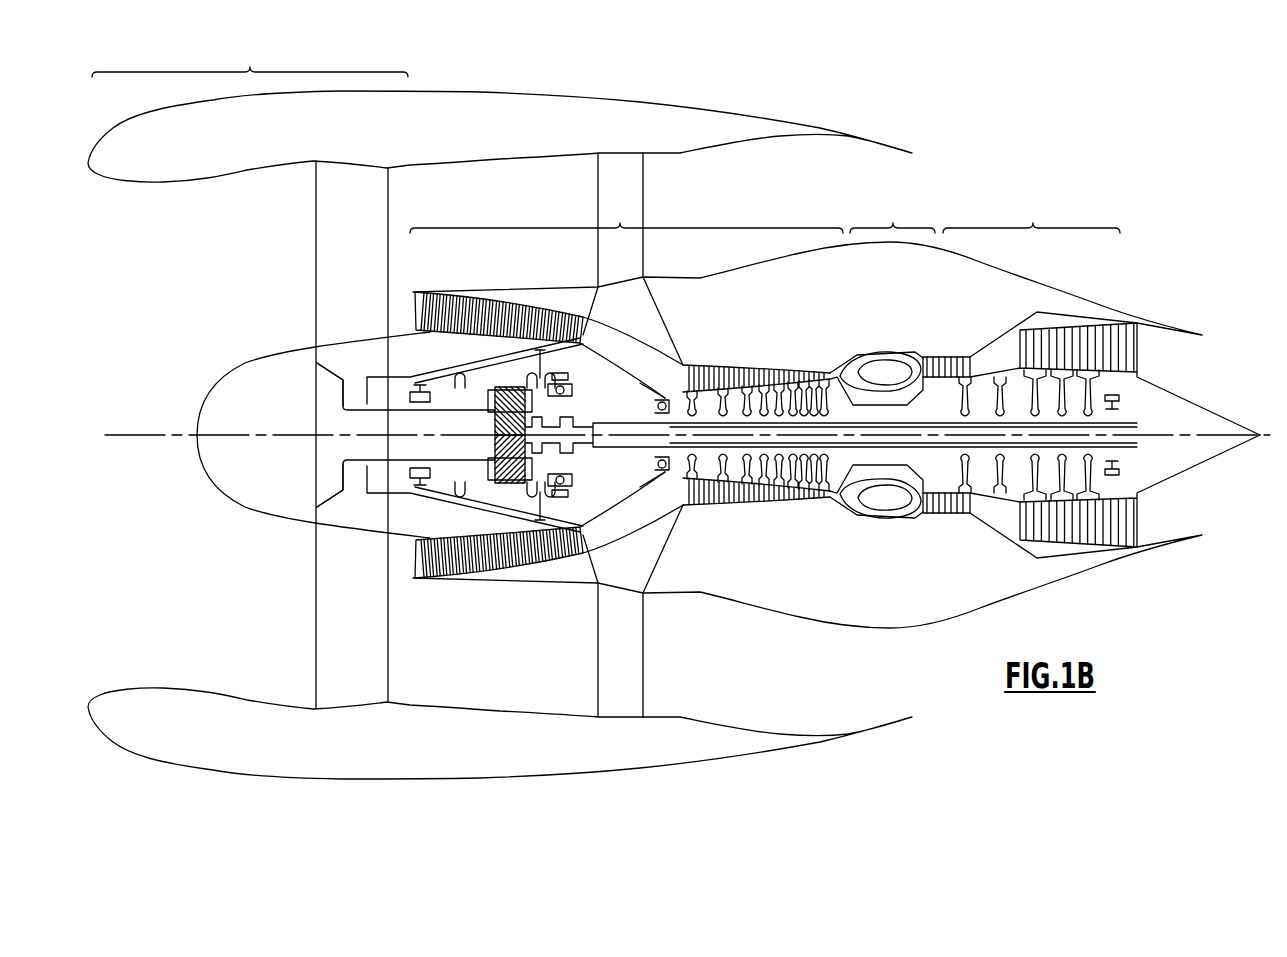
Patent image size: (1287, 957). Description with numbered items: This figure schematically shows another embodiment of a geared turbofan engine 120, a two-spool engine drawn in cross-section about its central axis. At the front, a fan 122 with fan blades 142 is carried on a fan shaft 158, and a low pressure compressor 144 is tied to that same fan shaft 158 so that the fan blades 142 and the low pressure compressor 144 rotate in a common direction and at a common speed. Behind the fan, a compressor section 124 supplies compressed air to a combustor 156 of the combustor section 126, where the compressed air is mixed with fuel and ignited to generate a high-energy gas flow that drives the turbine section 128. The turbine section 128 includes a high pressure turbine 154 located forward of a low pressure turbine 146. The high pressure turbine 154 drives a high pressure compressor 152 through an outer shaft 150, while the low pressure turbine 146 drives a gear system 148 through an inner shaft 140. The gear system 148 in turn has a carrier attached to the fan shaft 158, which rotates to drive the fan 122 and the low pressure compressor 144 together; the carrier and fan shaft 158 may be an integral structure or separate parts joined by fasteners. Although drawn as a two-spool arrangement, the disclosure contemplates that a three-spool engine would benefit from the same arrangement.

The geared turbofan engine 120 is at (926, 104).
The fan 122 is at (250, 58).
The compressor section 124 is at (626, 215).
The combustor section 126 is at (892, 215).
The turbine section 128 is at (1031, 215).
The inner shaft 140 is at (568, 552).
The fan blades 142 is at (312, 305).
The low pressure compressor 144 is at (500, 288).
The low pressure turbine 146 is at (1051, 303).
The gear system 148 is at (468, 489).
The outer shaft 150 is at (858, 500).
The high pressure compressor 152 is at (781, 351).
The high pressure turbine 154 is at (951, 350).
The combustor 156 is at (882, 370).
The fan shaft 158 is at (356, 396).